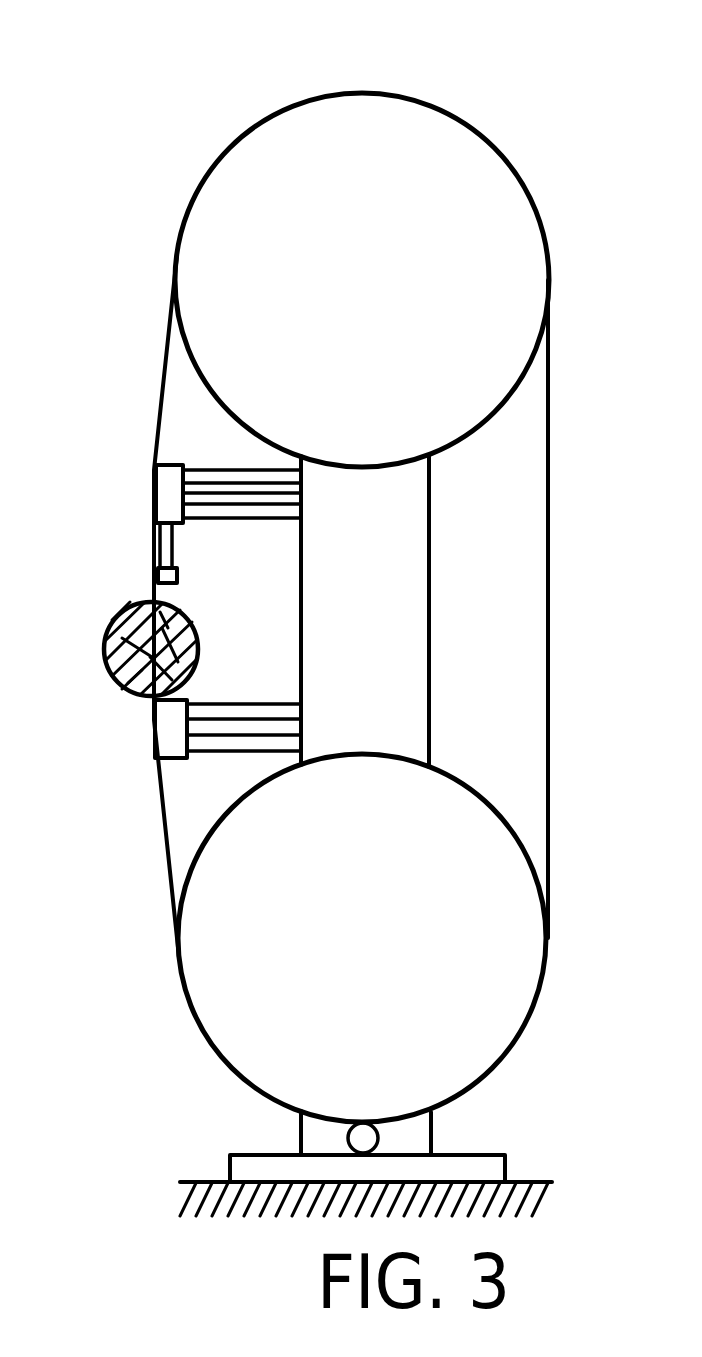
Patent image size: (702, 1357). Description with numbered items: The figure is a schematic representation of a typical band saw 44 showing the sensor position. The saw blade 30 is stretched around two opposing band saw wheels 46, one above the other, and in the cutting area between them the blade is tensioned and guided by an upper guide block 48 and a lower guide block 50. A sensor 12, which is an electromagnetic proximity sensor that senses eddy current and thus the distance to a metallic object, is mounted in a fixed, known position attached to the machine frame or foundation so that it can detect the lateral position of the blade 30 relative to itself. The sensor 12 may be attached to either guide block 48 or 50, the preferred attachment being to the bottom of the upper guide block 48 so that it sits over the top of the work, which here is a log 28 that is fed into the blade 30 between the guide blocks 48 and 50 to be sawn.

The band saw 44 is at (318, 95).
The band saw wheels 46 is at (367, 354).
The saw blade 30 is at (158, 388).
The upper guide block 48 is at (152, 478).
The sensor 12 is at (178, 566).
The log 28 is at (127, 688).
The lower guide block 50 is at (170, 740).